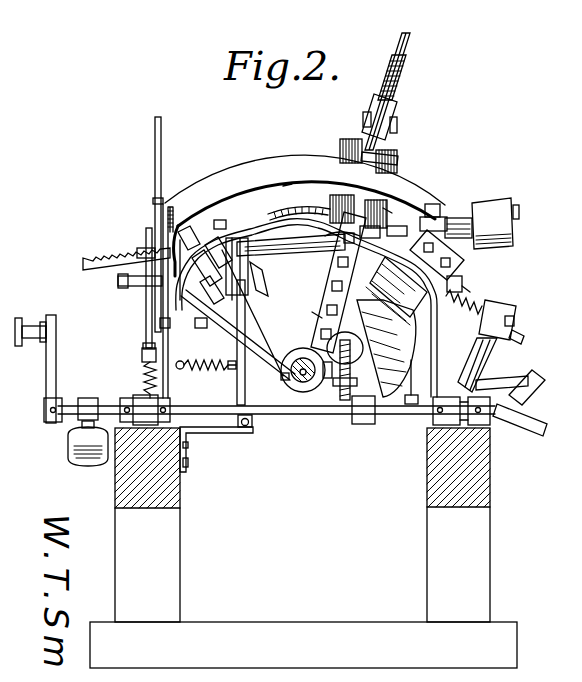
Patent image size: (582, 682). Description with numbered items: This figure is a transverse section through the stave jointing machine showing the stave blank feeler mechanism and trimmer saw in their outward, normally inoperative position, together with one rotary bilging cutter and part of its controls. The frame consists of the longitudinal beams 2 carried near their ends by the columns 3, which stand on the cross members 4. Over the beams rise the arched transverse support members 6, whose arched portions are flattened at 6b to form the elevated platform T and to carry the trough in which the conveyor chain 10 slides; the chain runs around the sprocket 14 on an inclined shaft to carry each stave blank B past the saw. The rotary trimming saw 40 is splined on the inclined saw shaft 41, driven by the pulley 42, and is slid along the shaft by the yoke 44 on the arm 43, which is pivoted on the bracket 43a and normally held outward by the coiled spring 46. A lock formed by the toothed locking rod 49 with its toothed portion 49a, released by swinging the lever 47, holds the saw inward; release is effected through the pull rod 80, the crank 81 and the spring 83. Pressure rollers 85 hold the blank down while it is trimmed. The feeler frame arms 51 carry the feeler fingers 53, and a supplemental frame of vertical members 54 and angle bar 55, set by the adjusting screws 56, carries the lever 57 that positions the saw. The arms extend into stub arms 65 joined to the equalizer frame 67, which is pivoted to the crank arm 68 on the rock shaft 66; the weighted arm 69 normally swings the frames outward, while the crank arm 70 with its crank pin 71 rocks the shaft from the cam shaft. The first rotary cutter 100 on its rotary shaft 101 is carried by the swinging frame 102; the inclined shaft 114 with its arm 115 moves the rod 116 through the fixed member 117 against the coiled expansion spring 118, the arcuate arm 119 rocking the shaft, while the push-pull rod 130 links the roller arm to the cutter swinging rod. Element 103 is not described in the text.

The longitudinal beams 2 is at (177, 497).
The columns 3 is at (488, 567).
The cross members 4 is at (302, 645).
The arched transverse support members 6 is at (225, 225).
The flattened portion 6b is at (300, 205).
The conveyor chain 10 is at (390, 210).
The sprocket 14 is at (320, 292).
The rotary trimming saw 40 is at (250, 228).
The saw shaft 41 is at (285, 252).
The drive pulley 42 is at (494, 208).
The arm 43 is at (239, 386).
The bracket 43a is at (208, 434).
The yoke 44 is at (222, 243).
The coiled spring 46 is at (206, 354).
The lever 47 is at (155, 196).
The toothed locking rod 49 is at (97, 262).
The toothed portion 49a is at (120, 283).
The feeler frame arms 51 is at (200, 324).
The feeler fingers 53 is at (185, 228).
The vertical members 54 is at (298, 360).
The angle bar 55 is at (260, 279).
The adjusting screws 56 is at (163, 323).
The lever 57 is at (302, 383).
The stub arms 65 is at (352, 338).
The rock shaft 66 is at (108, 402).
The equalizer frame 67 is at (350, 356).
The crank arm 68 is at (358, 421).
The weighted arm 69 is at (72, 447).
The crank arm 70 is at (47, 382).
The crank pin 71 is at (33, 325).
The pull rod 80 is at (142, 352).
The crank 81 is at (141, 357).
The spring 83 is at (190, 396).
The pressure rollers 85 is at (398, 170).
The first rotary cutter 100 is at (462, 282).
The rotary shaft 101 is at (470, 293).
The swinging frame 102 is at (462, 363).
The rack 103 is at (363, 303).
The inclined vertical shaft 114 is at (534, 388).
The arm 115 is at (512, 320).
The rod 116 is at (500, 303).
The fixed member 117 is at (470, 292).
The coiled expansion spring 118 is at (522, 337).
The arcuate arm 119 is at (530, 440).
The push-pull rod 130 is at (410, 404).
The platform T is at (283, 185).
The stave blank B is at (333, 213).